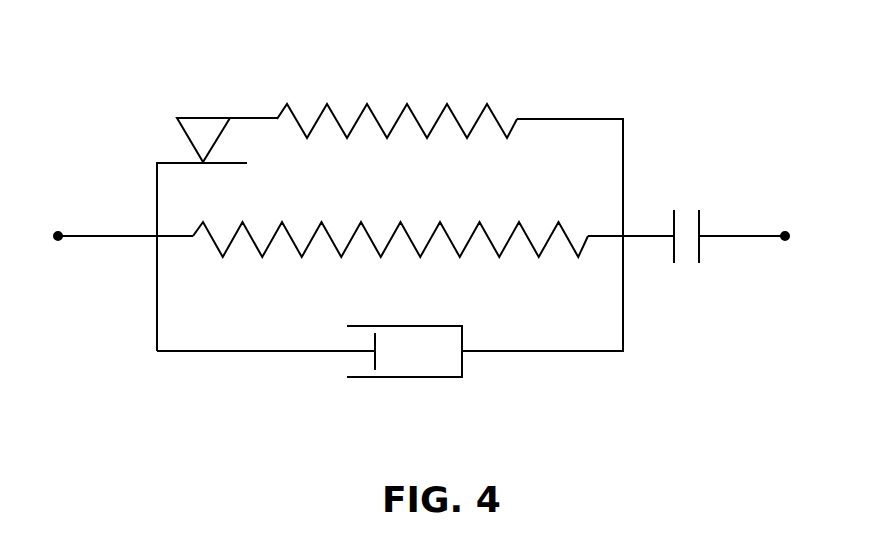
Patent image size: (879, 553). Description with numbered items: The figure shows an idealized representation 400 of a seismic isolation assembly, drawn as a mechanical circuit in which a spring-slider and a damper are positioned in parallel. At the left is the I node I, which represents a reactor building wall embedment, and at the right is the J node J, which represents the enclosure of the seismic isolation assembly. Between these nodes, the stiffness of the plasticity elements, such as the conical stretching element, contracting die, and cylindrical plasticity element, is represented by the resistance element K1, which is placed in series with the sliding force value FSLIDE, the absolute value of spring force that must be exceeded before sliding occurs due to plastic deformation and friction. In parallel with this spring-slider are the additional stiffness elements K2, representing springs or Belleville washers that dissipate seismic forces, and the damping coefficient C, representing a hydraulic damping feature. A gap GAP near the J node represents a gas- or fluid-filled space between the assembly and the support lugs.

The idealized representation 400 is at (127, 42).
The sliding force value FSLIDE is at (213, 122).
The plasticity element stiffness K1 is at (397, 101).
The additional stiffness elements K2 is at (433, 217).
The gap GAP is at (686, 215).
The damping coefficient C is at (390, 346).
The I node I is at (115, 237).
The J node J is at (754, 237).